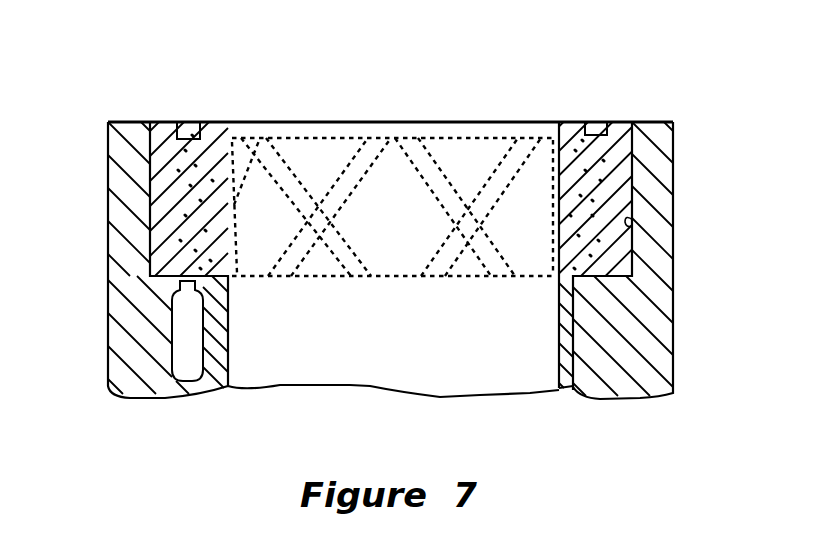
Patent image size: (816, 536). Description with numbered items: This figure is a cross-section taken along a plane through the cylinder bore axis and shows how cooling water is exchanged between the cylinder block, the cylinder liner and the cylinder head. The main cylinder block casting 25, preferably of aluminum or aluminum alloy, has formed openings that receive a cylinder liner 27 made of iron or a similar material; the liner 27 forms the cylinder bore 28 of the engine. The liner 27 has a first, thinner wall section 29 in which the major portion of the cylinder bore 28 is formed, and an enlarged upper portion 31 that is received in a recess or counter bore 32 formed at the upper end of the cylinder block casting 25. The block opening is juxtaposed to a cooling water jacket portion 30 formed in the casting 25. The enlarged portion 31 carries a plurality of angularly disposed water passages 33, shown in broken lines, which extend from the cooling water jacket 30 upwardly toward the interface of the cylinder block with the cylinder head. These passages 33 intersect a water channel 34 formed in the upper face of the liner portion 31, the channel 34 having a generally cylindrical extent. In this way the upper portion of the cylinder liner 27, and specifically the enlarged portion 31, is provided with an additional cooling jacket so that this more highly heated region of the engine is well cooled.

The main cylinder block casting 25 is at (680, 301).
The cylinder liner 27 is at (670, 83).
The cylinder bore 28 is at (559, 318).
The first thinner wall section 29 is at (576, 370).
The cooling water jacket portion 30 is at (182, 343).
The enlarged upper portion 31 is at (632, 185).
The counter bore 32 is at (633, 220).
The angularly disposed water passages 33 is at (180, 228).
The water channel 34 is at (598, 122).